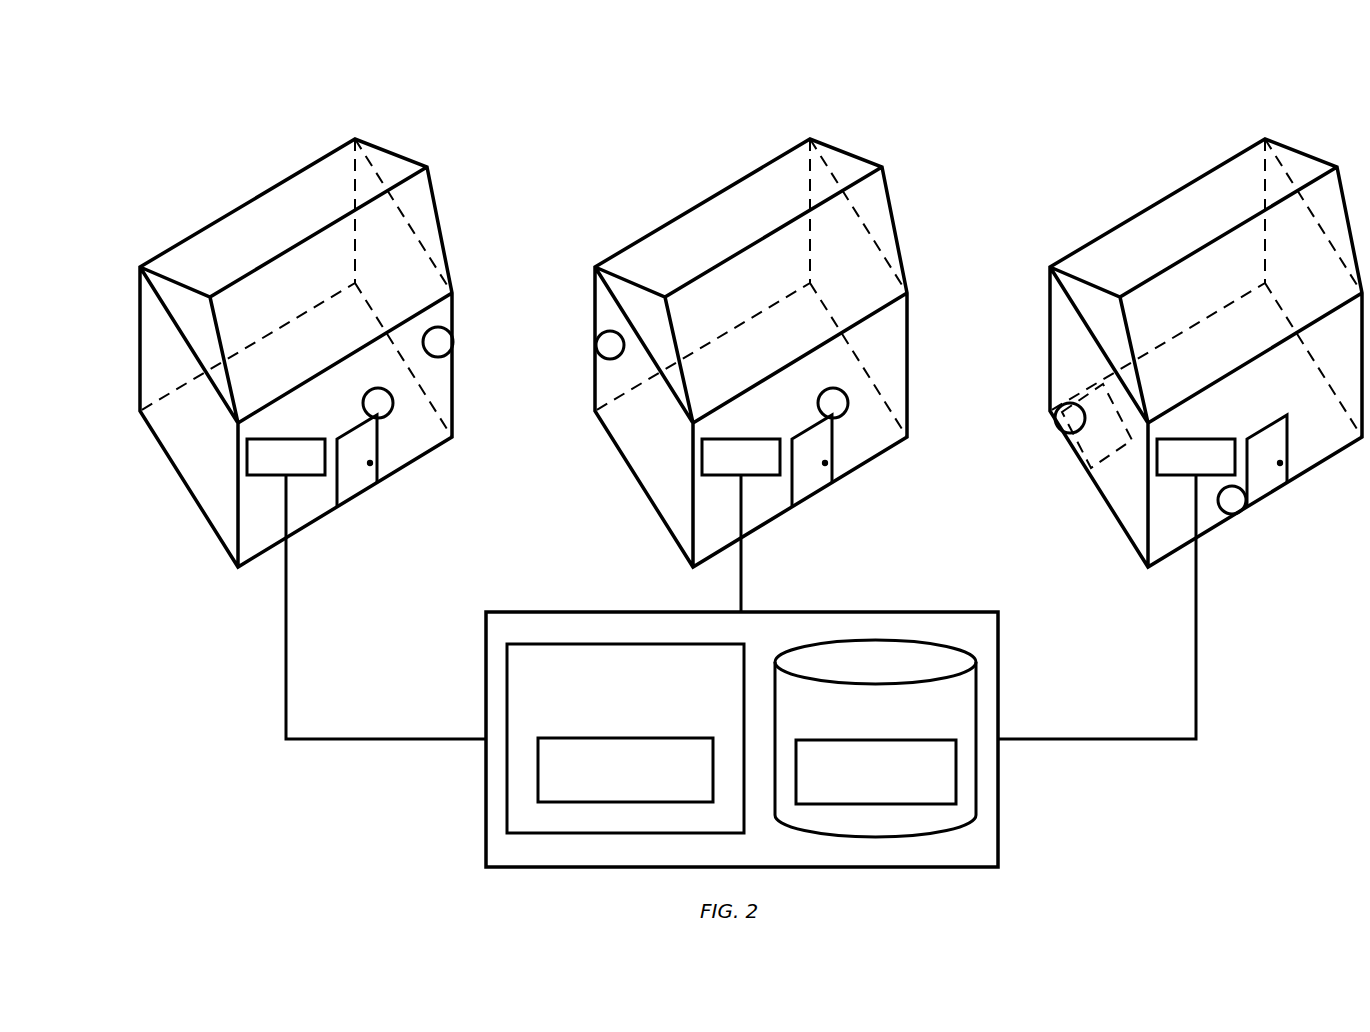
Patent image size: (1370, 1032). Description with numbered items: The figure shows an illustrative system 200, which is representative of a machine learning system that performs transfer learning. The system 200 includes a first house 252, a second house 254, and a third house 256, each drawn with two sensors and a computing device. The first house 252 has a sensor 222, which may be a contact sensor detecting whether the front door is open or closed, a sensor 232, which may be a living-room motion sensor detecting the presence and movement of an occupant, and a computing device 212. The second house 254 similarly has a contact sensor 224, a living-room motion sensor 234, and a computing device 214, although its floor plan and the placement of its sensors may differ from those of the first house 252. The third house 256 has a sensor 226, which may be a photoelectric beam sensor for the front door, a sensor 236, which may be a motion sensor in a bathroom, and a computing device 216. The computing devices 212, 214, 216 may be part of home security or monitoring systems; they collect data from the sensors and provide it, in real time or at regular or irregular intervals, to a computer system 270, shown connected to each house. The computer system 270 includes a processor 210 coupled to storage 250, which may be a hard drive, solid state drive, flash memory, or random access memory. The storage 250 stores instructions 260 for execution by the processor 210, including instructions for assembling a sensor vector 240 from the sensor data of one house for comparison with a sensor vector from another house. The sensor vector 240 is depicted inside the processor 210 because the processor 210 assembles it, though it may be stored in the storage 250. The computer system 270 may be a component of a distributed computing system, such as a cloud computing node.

The system 200 is at (410, 40).
The processor 210 is at (607, 714).
The computing device 212 is at (268, 469).
The computing device 214 is at (741, 525).
The computing device 216 is at (1116, 589).
The sensor 222 is at (390, 417).
The sensor 224 is at (881, 438).
The sensor 226 is at (1270, 516).
The sensor 232 is at (440, 356).
The sensor 234 is at (574, 337).
The sensor 236 is at (1036, 428).
The sensor vector 240 is at (607, 793).
The storage 250 is at (857, 723).
The first house 252 is at (249, 201).
The second house 254 is at (735, 375).
The third house 256 is at (1174, 439).
The instructions 260 is at (857, 795).
The computer system 270 is at (556, 598).